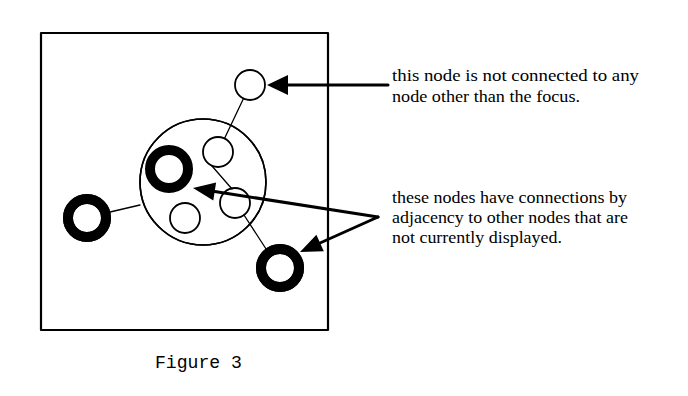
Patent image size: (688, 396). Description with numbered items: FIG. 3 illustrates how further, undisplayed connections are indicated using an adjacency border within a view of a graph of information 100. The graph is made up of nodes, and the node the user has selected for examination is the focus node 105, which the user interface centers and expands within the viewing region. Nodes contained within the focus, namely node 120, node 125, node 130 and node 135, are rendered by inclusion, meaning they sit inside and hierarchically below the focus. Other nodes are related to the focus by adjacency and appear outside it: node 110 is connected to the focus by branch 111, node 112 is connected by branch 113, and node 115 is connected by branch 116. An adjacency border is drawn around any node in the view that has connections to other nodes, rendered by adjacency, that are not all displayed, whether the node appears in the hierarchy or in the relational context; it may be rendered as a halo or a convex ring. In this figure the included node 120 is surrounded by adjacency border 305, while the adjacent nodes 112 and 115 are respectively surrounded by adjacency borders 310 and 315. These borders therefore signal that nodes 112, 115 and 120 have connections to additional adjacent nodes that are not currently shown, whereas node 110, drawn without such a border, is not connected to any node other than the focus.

The graph of information 100 is at (184, 181).
The focus node 105 is at (178, 70).
The node 110 is at (258, 63).
The branch 111 is at (242, 112).
The node 112 is at (84, 216).
The branch 113 is at (126, 213).
The node 115 is at (278, 270).
The branch 116 is at (257, 233).
The node 120 is at (172, 164).
The node 125 is at (222, 155).
The node 130 is at (235, 205).
The node 135 is at (183, 219).
The adjacency border 305 is at (138, 188).
The adjacency border 310 is at (72, 243).
The adjacency border 315 is at (305, 268).